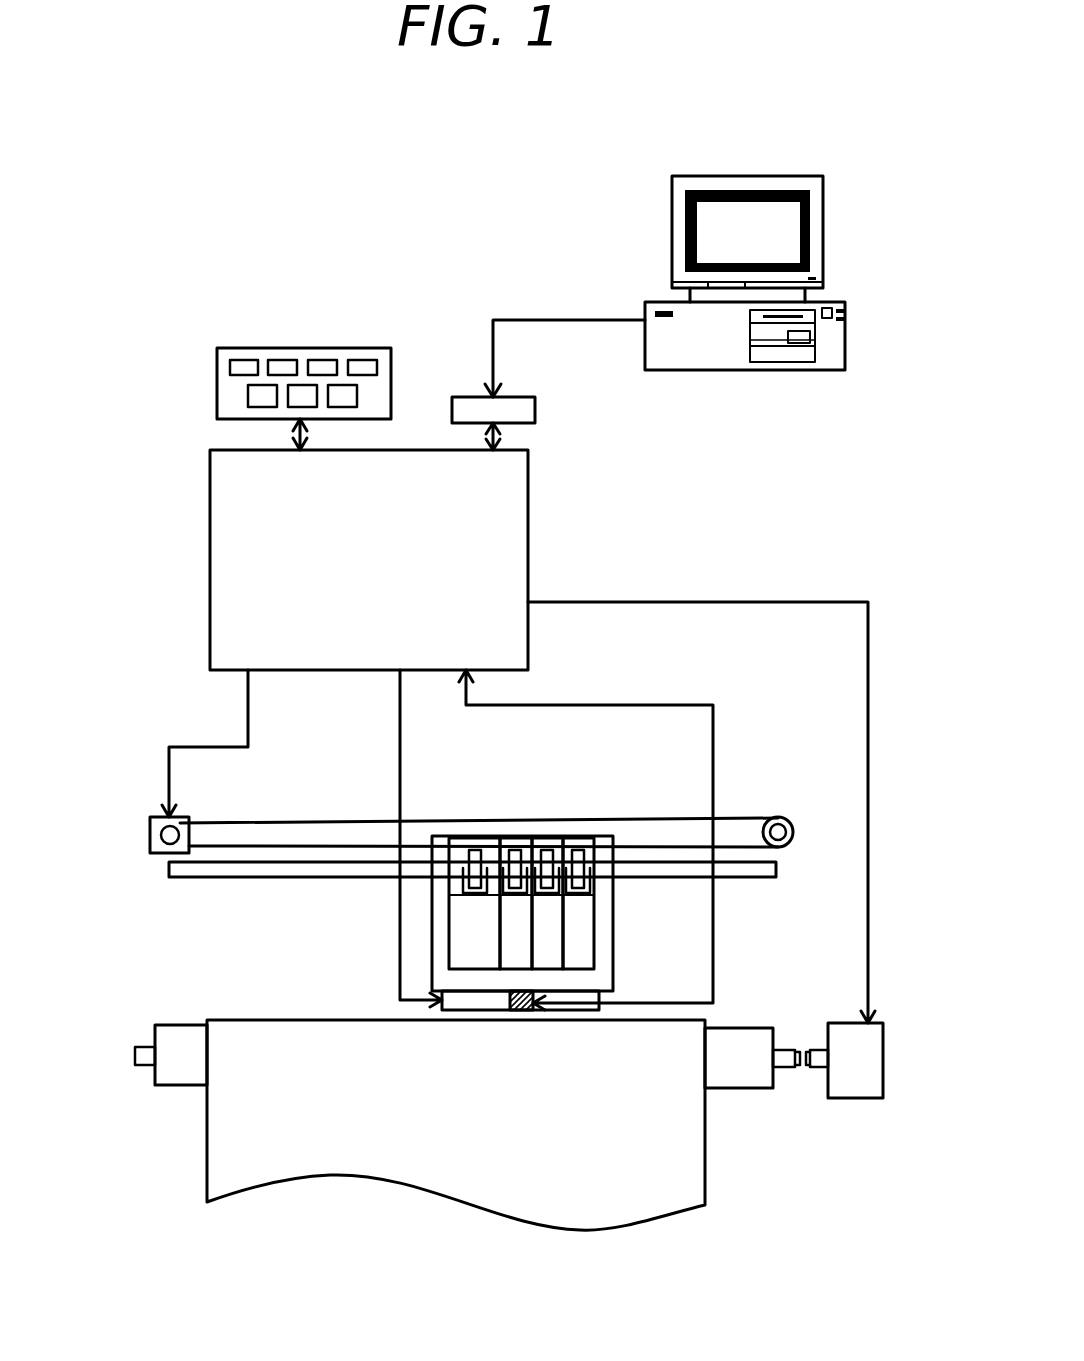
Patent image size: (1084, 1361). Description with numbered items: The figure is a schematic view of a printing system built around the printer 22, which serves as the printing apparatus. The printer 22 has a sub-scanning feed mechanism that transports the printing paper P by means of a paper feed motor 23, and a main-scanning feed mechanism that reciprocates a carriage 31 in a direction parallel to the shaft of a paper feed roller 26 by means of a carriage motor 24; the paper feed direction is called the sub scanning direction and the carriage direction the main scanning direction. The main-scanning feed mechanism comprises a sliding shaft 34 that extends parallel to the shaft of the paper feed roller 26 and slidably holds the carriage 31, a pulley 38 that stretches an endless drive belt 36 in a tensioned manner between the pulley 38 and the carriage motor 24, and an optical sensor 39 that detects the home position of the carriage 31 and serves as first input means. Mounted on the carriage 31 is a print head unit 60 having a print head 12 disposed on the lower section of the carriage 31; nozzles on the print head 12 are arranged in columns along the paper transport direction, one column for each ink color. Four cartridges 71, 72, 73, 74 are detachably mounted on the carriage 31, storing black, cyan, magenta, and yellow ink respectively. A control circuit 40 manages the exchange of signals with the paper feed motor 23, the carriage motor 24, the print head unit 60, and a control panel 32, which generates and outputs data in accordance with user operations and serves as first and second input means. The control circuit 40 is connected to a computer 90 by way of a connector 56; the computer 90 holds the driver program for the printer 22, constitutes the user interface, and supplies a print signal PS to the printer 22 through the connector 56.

The computer 90 is at (823, 262).
The print signal PS is at (565, 341).
The control panel 32 is at (303, 348).
The connector 56 is at (533, 397).
The control circuit 40 is at (528, 500).
The carriage motor 24 is at (162, 853).
The drive belt 36 is at (313, 822).
The pulley 38 is at (766, 817).
The sliding shaft 34 is at (262, 877).
The carriage 31 is at (545, 890).
The print head unit 60 is at (612, 928).
The cartridge 71 is at (470, 842).
The cartridge 72 is at (500, 842).
The cartridge 73 is at (540, 842).
The cartridge 74 is at (580, 842).
The print head 12 is at (440, 1014).
The optical sensor 39 is at (546, 1019).
The printer 22 is at (509, 1162).
The paper feed roller 26 is at (760, 1088).
The paper feed motor 23 is at (855, 1098).
The printing paper P is at (705, 1185).